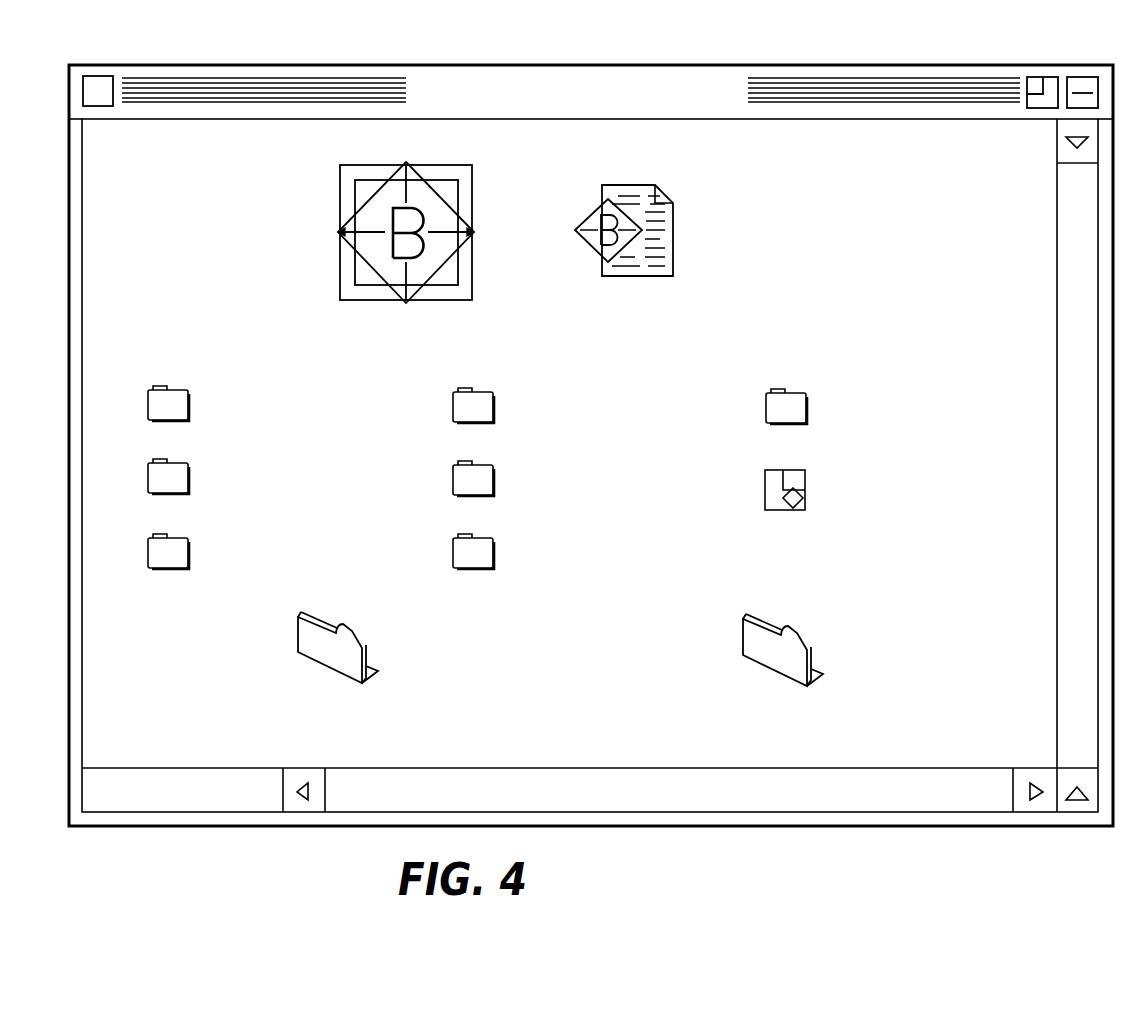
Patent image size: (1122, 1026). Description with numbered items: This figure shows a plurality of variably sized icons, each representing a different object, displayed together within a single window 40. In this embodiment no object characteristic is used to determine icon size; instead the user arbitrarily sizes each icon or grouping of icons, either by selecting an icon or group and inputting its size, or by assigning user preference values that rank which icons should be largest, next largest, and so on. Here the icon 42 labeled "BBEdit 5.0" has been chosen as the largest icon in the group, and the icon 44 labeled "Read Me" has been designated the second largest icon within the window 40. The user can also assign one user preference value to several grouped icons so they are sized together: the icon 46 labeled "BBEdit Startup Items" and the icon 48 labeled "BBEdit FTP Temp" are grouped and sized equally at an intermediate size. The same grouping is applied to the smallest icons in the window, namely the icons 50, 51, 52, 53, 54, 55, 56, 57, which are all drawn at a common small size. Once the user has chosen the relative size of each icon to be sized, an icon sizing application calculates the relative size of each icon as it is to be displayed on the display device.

The window 40 is at (863, 65).
The icon 42 is at (340, 191).
The icon 44 is at (675, 226).
The icon 46 is at (297, 621).
The icon 48 is at (742, 622).
The icon 50 is at (176, 386).
The icon 51 is at (150, 470).
The icon 52 is at (150, 548).
The icon 53 is at (482, 390).
The icon 54 is at (453, 476).
The icon 55 is at (453, 548).
The icon 56 is at (795, 390).
The icon 57 is at (765, 476).